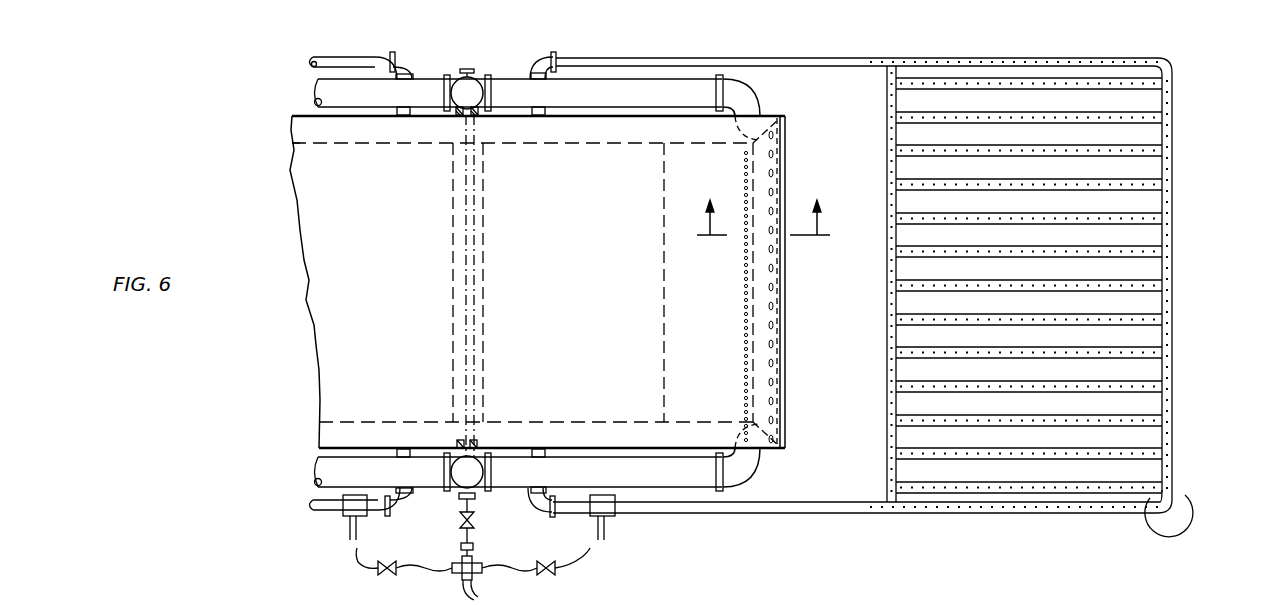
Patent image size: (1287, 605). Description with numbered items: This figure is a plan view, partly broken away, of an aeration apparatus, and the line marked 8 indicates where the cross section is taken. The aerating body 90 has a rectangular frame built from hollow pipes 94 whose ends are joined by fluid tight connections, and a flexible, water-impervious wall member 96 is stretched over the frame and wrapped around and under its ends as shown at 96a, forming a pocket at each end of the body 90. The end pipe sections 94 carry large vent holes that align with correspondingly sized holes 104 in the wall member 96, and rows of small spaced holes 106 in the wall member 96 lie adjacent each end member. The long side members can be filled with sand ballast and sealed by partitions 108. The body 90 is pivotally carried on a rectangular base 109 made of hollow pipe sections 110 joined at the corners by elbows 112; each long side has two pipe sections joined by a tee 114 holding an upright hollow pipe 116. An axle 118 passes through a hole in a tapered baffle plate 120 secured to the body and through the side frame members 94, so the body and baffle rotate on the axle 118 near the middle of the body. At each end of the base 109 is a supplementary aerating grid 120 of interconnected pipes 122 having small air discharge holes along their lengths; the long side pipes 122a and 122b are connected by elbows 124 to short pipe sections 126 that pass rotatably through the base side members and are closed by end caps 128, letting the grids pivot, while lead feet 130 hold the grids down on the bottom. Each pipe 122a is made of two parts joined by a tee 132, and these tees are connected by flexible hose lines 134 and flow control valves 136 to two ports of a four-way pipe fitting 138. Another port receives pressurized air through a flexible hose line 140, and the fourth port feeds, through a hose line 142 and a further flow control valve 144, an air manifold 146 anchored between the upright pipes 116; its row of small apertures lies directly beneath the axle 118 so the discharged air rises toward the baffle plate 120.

The aerating body 90 is at (796, 178).
The hollow pipes 94 is at (372, 150).
The wall member 96 is at (340, 344).
The wall member end portion 96a is at (664, 190).
The holes 104 is at (783, 290).
The small spaced holes 106 is at (744, 289).
The partitions 108 is at (760, 112).
The rectangular base 109 is at (315, 470).
The hollow pipe sections 110 is at (668, 102).
The elbows 112 is at (748, 462).
The tee 114 is at (472, 78).
The upright hollow pipe 116 is at (458, 84).
The axle 118 is at (474, 218).
The baffle plate 120 is at (483, 360).
The interconnected pipes 122 is at (1158, 352).
The grid side pipe 122a is at (320, 505).
The grid side pipe 122b is at (360, 58).
The elbows 124 is at (532, 62).
The short pipe sections 126 is at (540, 80).
The end caps 128 is at (540, 116).
The lead feet 130 is at (1178, 500).
The tee 132 is at (358, 505).
The flexible hose lines 134 is at (350, 533).
The flow control valves 136 is at (380, 576).
The four-way pipe fitting 138 is at (470, 574).
The flexible hose line 140 is at (462, 593).
The hose line 142 is at (474, 552).
The flow control valve 144 is at (458, 540).
The air manifold 146 is at (460, 492).
The section line 8- 8 is at (763, 230).